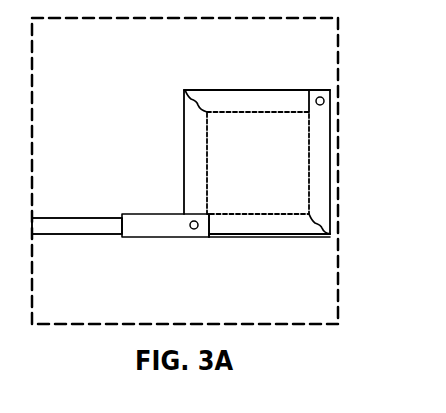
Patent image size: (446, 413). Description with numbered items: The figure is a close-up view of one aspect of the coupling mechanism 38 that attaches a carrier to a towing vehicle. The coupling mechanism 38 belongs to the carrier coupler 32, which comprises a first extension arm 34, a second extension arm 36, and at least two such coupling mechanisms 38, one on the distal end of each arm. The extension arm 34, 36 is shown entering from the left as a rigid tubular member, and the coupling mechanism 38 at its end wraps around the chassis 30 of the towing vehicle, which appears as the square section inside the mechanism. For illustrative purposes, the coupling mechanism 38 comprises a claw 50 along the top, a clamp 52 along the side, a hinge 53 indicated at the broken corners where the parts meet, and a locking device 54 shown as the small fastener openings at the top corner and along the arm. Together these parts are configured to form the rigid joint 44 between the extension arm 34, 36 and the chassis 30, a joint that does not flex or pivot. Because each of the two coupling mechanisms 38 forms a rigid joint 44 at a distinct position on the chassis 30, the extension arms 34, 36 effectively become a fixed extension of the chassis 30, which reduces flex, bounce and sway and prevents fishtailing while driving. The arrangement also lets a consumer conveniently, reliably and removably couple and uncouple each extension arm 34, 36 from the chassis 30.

The chassis 30 is at (274, 178).
The carrier coupler 32 is at (330, 283).
The first extension arm 34 is at (101, 227).
The second extension arm 36 is at (77, 226).
The coupling mechanism 38 is at (329, 247).
The rigid joint 44 is at (217, 108).
The claw 50 is at (262, 103).
The clamp 52 is at (320, 170).
The hinge 53 is at (184, 89).
The locking device 54 is at (192, 220).